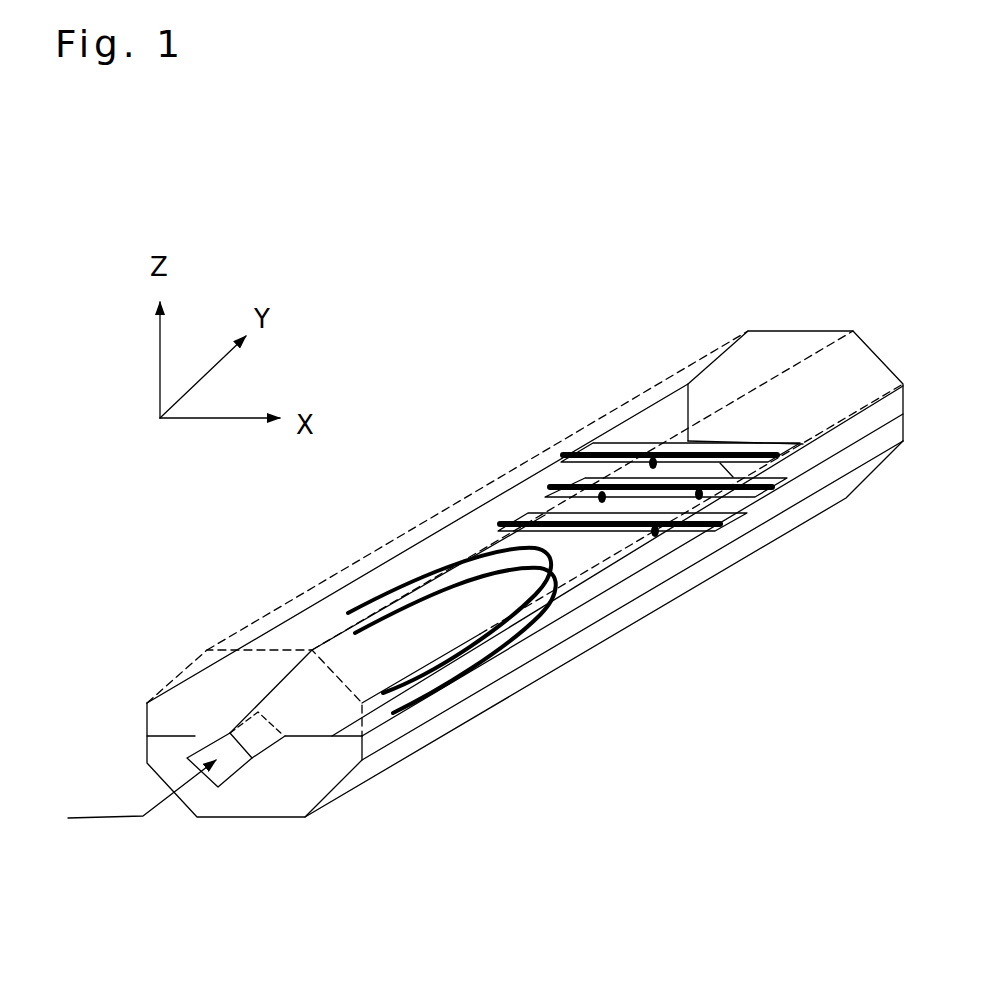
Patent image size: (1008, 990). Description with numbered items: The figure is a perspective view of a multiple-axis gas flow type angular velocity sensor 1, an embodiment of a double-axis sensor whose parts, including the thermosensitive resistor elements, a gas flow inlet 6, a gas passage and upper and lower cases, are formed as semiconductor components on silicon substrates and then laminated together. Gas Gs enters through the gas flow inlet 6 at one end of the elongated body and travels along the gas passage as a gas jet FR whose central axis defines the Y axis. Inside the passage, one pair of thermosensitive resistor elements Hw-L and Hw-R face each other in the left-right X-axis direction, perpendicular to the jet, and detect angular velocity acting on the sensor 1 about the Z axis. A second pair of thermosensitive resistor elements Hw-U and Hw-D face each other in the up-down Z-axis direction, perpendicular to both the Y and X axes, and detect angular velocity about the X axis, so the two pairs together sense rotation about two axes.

The multiple-axis gas flow type angular velocity sensor 1 is at (497, 281).
The gas flow inlet 6 is at (206, 777).
The thermosensitive resistor element Hw-U is at (636, 441).
The thermosensitive resistor element Hw-L is at (607, 478).
The thermosensitive resistor element Hw-R is at (708, 500).
The thermosensitive resistor element Hw-D is at (659, 538).
The gas jet FR is at (504, 654).
The gas Gs is at (142, 789).